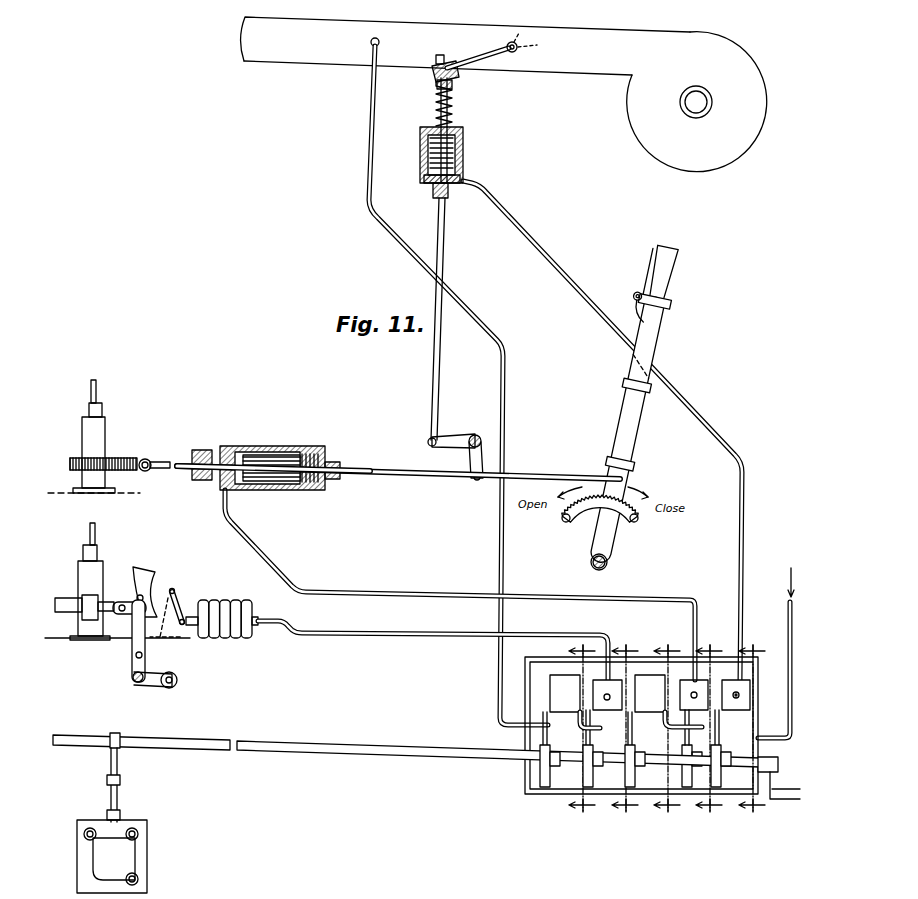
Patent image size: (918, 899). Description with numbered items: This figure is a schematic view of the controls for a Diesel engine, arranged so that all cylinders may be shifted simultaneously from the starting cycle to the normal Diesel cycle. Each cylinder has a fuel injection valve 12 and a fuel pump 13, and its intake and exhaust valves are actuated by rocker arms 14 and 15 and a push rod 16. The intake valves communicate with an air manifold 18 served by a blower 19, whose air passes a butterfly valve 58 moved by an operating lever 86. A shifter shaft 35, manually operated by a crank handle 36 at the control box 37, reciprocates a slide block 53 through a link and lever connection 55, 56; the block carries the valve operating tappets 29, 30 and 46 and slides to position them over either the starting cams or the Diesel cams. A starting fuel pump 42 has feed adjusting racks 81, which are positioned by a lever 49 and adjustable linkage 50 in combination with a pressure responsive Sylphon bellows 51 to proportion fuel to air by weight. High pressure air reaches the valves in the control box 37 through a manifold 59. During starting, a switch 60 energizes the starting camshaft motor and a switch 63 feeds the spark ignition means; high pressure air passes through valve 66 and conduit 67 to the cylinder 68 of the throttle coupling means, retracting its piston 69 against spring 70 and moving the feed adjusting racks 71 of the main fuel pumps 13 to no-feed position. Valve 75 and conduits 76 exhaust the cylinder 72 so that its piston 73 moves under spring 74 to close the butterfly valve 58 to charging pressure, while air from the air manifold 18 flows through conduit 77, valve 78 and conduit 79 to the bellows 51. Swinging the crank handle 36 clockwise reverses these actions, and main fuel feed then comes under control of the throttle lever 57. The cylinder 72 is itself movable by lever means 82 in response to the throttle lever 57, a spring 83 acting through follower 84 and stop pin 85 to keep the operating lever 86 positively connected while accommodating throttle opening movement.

The fuel injection valve 12 is at (738, 731).
The fuel pump 13 is at (101, 432).
The rocker arm 14 is at (652, 730).
The rocker arm 15 is at (610, 731).
The push rod 16 is at (567, 730).
The air manifold 18 is at (303, 62).
The blower 19 is at (634, 113).
The tappet 29 is at (84, 834).
The tappet 30 is at (140, 834).
The shifter shaft 35 is at (330, 742).
The crank handle 36 is at (780, 800).
The control box 37 is at (532, 794).
The starting fuel pump 42 is at (84, 581).
The tappet 46 is at (140, 880).
The lever 49 is at (135, 684).
The adjustable linkage 50 is at (140, 567).
The Sylphon bellows 51 is at (228, 600).
The slide block 53 is at (77, 864).
The link 55 is at (117, 763).
The lever 56 is at (119, 797).
The throttle lever 57 is at (655, 336).
The butterfly valve 58 is at (531, 43).
The manifold 59 is at (787, 607).
The switch 60 is at (562, 692).
The switch 63 is at (648, 692).
The valve 66 is at (683, 735).
The conduit 67 is at (412, 598).
The cylinder 68 is at (283, 446).
The piston 69 is at (296, 482).
The spring 70 is at (352, 451).
The feed adjusting rack 71 is at (130, 470).
The cylinder 72 is at (463, 155).
The piston 73 is at (424, 178).
The spring 74 is at (427, 152).
The valve 75 is at (750, 695).
The conduit 76 is at (716, 437).
The conduit 77 is at (508, 417).
The valve 78 is at (606, 730).
The conduit 79 is at (412, 638).
The feed adjusting rack 81 is at (72, 612).
The lever means 82 is at (453, 442).
The spring 83 is at (450, 101).
The follower 84 is at (432, 74).
The stop pin 85 is at (436, 60).
The operating lever 86 is at (492, 52).